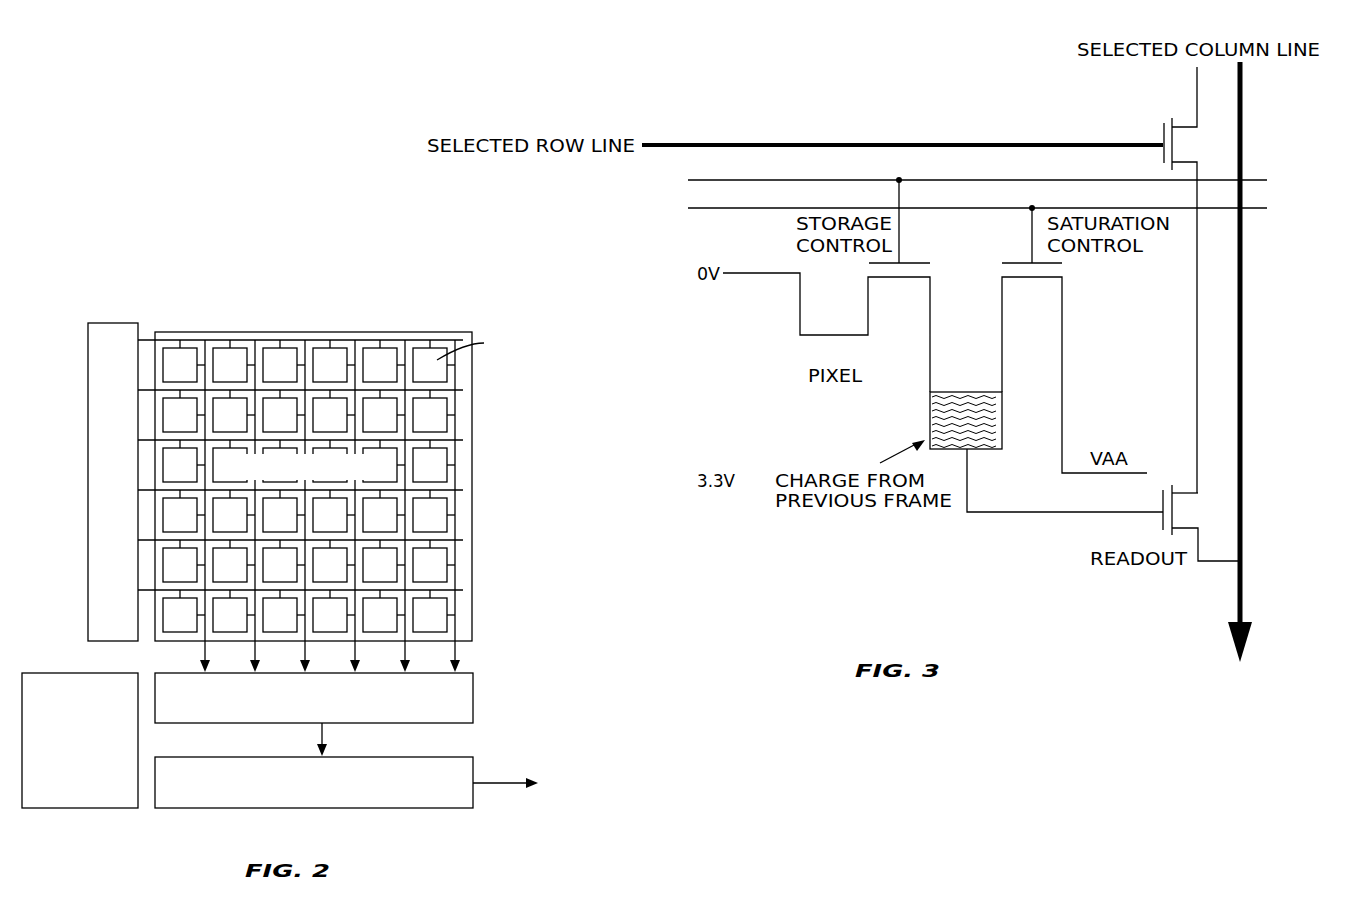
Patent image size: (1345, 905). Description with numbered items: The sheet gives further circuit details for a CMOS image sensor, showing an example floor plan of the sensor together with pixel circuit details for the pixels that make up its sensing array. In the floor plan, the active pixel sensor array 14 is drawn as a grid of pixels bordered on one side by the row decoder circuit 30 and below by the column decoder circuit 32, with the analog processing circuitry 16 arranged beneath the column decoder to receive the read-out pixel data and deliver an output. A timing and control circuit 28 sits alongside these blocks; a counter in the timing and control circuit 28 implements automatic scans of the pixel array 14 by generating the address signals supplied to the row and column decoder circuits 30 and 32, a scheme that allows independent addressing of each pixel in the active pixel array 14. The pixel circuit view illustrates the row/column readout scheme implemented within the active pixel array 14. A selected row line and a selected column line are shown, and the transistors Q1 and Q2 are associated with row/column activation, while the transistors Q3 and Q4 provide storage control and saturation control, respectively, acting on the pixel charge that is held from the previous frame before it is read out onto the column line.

In FIG. 2, the active pixel sensor array 14 is at (388, 332).
In FIG. 2, the analog processing circuitry 16 is at (473, 768).
In FIG. 2, the image readout timing and control circuitry 28 is at (101, 808).
In FIG. 2, the row decoder circuit 30 is at (88, 375).
In FIG. 2, the column decoder circuit 32 is at (473, 690).
In FIG. 3, the transistor Q1 is at (1161, 135).
In FIG. 3, the transistor Q2 is at (1160, 518).
In FIG. 3, the transistor Q3 is at (887, 280).
In FIG. 3, the transistor Q4 is at (1030, 280).